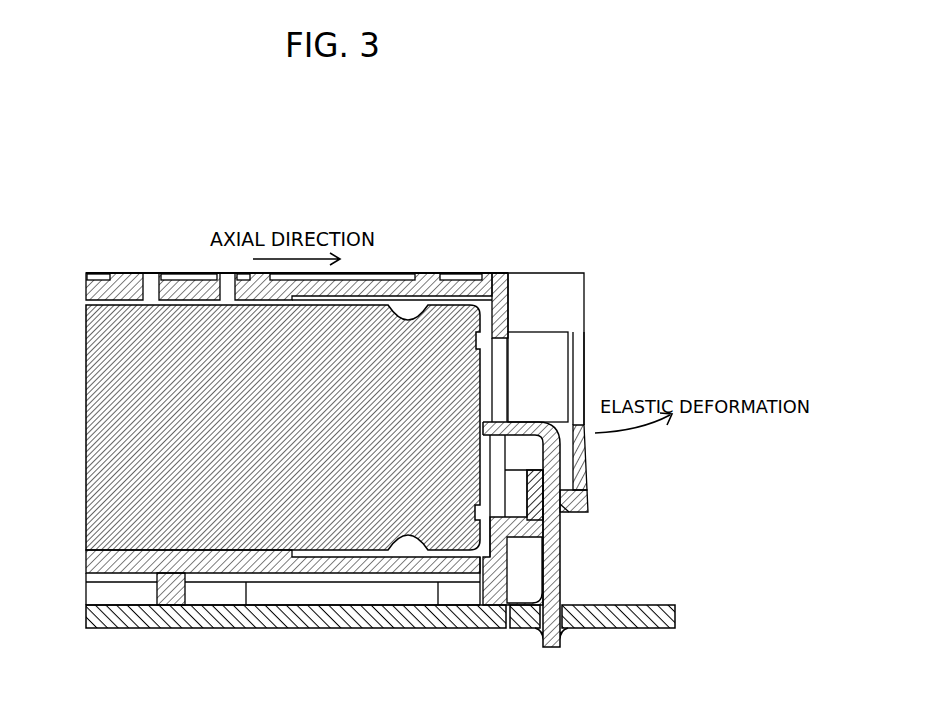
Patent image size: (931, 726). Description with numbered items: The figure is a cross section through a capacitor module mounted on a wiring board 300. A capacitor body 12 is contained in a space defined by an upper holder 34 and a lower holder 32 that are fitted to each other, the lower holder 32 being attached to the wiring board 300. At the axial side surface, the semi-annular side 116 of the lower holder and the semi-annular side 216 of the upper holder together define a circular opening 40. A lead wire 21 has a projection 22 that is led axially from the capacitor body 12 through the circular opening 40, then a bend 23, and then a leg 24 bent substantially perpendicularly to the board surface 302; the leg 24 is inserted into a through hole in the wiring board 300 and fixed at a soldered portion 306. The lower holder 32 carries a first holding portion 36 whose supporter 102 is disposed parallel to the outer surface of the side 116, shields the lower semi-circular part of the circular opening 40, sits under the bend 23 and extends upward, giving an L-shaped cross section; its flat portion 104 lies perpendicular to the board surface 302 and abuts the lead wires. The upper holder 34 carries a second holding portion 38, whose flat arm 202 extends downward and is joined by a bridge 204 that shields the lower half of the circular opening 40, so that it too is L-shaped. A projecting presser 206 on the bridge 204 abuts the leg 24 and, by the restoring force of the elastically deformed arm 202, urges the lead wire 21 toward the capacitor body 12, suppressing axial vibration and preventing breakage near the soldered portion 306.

The capacitor body 12 is at (86, 377).
The lead wire 21 is at (521, 534).
The projection 22 is at (528, 423).
The bend 23 is at (549, 424).
The leg 24 is at (558, 570).
The lower holder 32 is at (102, 562).
The upper holder 34 is at (125, 282).
The first holding portion 36 is at (523, 538).
The second holding portion 38 is at (540, 273).
The circular opening 40 is at (498, 380).
The supporter 102 is at (537, 517).
The flat portion 104 is at (546, 497).
The side 116 is at (493, 520).
The arm 202 is at (577, 350).
The bridge 204 is at (582, 456).
The projecting presser 206 is at (587, 494).
The side 216 is at (490, 318).
The wiring board 300 is at (283, 628).
The board surface 302 is at (645, 605).
The soldered portion 306 is at (559, 633).